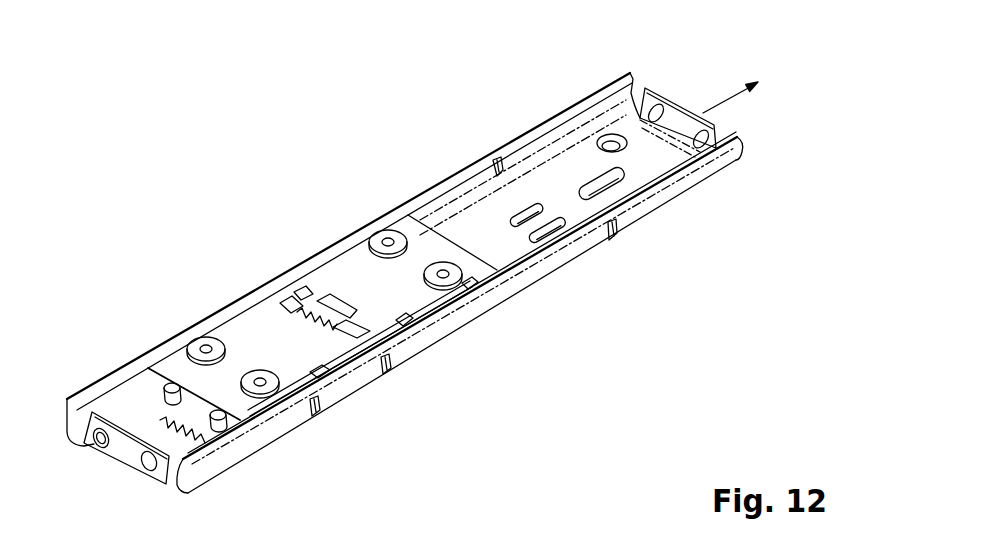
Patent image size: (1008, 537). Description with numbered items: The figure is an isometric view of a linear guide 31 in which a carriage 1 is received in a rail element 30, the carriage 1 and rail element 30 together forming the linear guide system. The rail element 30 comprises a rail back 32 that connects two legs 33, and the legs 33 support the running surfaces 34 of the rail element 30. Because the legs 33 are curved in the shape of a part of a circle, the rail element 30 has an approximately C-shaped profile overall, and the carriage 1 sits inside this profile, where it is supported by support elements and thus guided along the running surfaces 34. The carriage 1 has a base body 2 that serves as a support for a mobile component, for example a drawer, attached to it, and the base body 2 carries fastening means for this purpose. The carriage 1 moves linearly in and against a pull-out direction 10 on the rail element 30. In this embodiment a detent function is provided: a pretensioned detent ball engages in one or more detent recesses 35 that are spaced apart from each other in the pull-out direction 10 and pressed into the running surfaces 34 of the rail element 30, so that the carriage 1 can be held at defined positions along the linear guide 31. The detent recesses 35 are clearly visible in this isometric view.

The carriage 1 is at (434, 283).
The base body 2 is at (373, 297).
The pull-out direction 10 is at (745, 93).
The rail element 30 is at (700, 171).
The linear guide 31 is at (426, 283).
The rail back 32 is at (560, 200).
The legs 33 is at (531, 130).
The running surfaces 34 is at (545, 243).
The detent recesses 35 is at (500, 150).